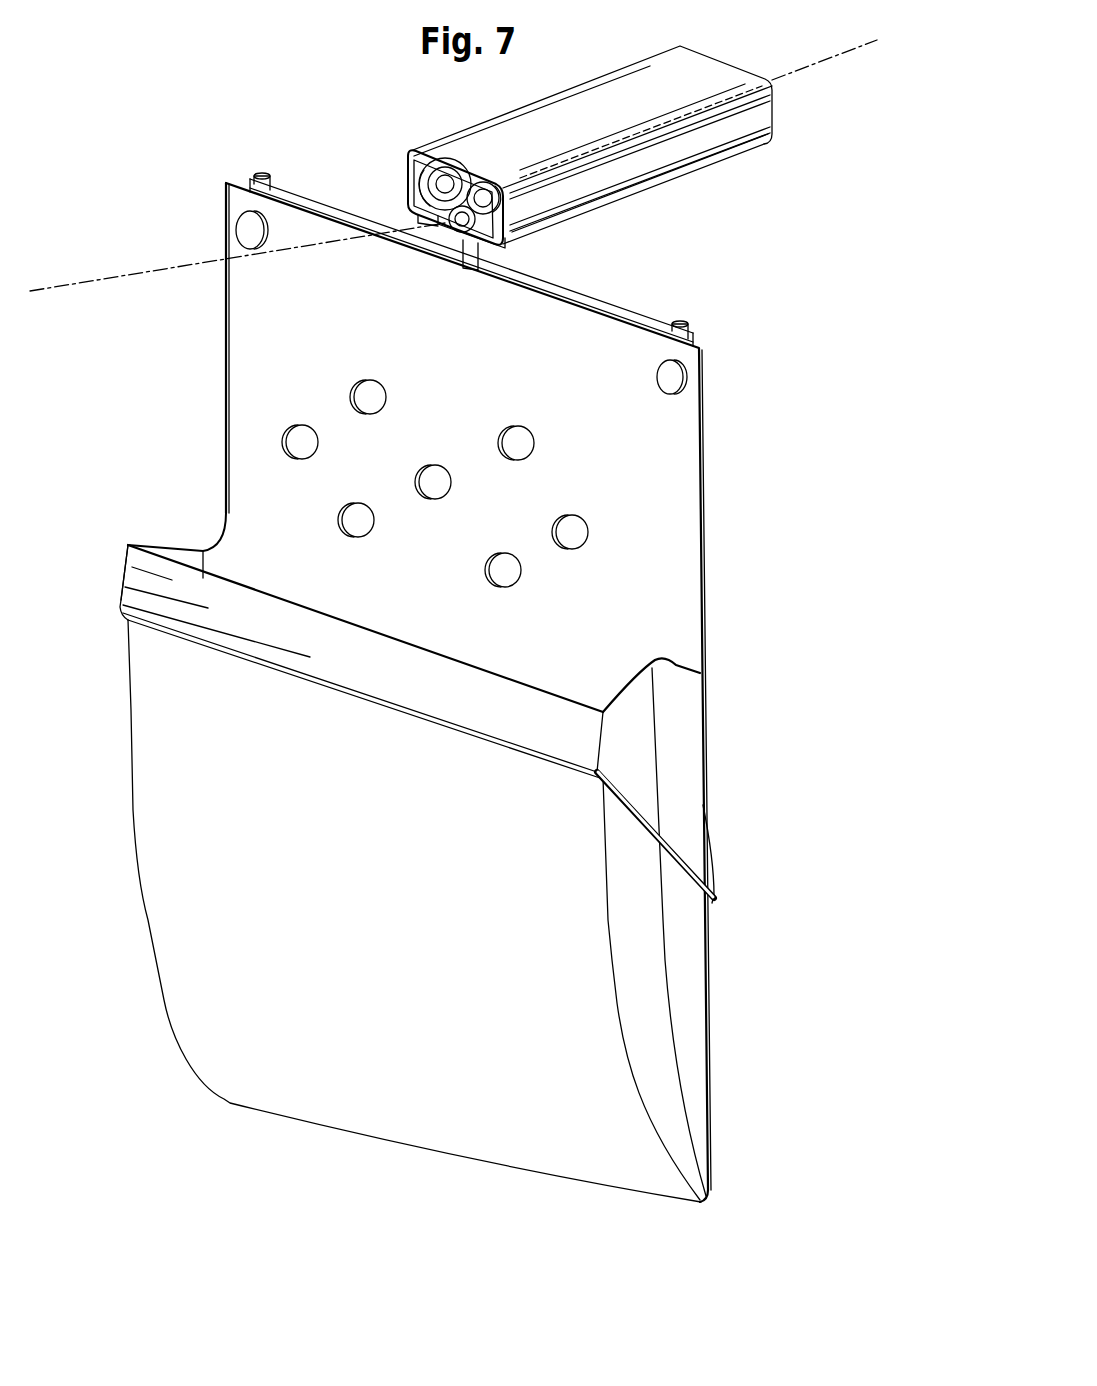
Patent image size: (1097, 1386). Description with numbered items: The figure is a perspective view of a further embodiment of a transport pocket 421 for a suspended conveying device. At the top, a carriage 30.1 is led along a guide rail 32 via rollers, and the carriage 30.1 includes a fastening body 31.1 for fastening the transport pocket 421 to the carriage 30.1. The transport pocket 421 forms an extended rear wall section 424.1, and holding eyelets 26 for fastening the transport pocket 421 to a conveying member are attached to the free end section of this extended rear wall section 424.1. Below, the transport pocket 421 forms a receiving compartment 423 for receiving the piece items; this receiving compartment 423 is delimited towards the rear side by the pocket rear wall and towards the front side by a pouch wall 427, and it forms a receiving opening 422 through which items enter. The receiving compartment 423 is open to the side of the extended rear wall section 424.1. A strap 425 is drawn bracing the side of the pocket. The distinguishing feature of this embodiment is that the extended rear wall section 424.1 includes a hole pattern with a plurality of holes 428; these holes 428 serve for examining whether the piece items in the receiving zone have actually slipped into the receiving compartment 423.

The holding eyelet 26 is at (245, 222).
The carriage 30.1 is at (432, 186).
The fastening body 31.1 is at (520, 278).
The guide rail 32 is at (682, 155).
The transport pocket 421 is at (447, 692).
The receiving opening 422 is at (435, 873).
The receiving compartment 423 is at (488, 939).
The extended rear wall section 424.1 is at (683, 545).
The strap 425 is at (641, 816).
The pouch wall 427 is at (177, 840).
The holes 428 is at (422, 481).